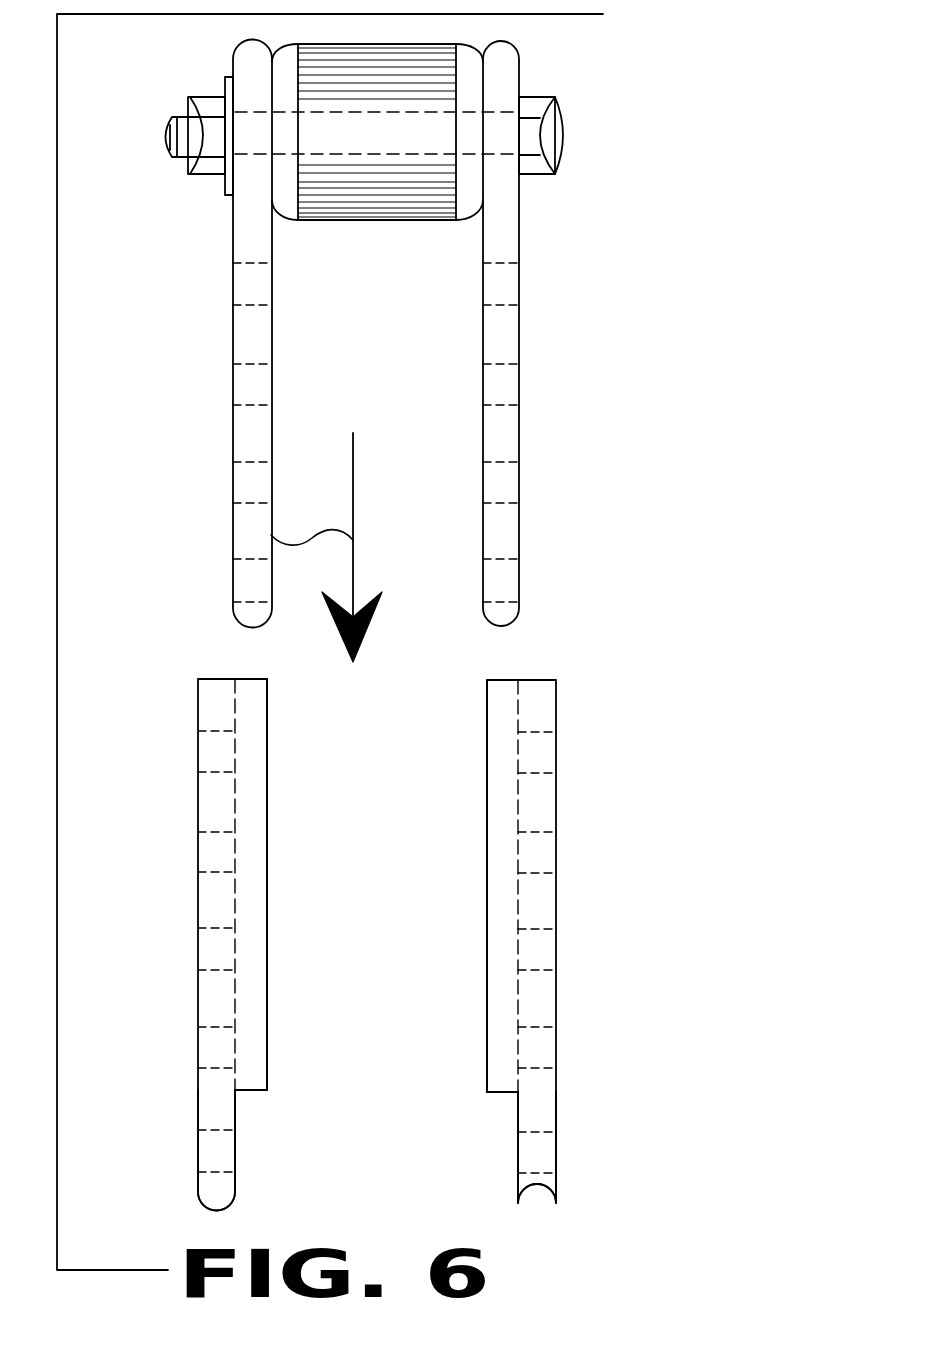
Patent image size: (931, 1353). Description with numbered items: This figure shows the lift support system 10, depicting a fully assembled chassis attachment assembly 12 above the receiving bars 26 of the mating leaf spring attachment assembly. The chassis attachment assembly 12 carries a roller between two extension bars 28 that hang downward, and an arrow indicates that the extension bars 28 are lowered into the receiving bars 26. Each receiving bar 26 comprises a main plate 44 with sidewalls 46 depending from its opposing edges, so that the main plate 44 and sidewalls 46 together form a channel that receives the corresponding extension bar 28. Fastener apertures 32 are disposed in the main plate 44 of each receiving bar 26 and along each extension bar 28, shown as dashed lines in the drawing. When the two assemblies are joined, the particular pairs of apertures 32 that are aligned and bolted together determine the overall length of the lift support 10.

The lift support system 10 is at (726, 97).
The chassis attachment assembly 12 is at (598, 165).
The receiving bars 26 is at (223, 679).
The extension bars 28 is at (234, 448).
The fastener apertures 32 is at (508, 305).
The main plate 44 is at (235, 1110).
The sidewalls 46 is at (267, 800).